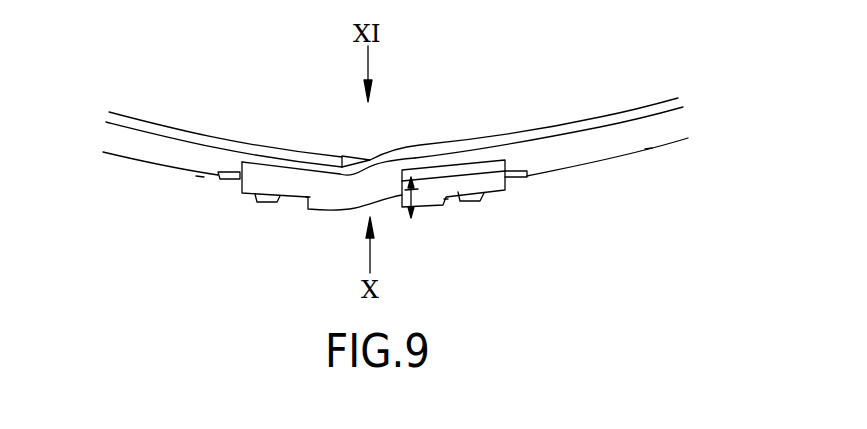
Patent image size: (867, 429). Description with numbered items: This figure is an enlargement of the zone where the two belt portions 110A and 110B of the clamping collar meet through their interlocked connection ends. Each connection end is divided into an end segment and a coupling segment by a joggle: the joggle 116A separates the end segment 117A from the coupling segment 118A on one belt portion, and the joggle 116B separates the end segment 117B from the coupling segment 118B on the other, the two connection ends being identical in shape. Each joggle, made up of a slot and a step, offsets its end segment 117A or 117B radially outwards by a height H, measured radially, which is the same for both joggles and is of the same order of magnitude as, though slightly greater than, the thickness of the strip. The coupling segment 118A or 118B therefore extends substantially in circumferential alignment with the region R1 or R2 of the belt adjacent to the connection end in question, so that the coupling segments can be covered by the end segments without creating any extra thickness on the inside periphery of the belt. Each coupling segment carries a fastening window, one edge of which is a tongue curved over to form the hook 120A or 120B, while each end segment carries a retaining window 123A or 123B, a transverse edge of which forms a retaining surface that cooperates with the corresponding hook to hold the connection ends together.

The belt portion 110A is at (597, 153).
The belt portion 110B is at (143, 153).
The joggle 116A is at (400, 135).
The joggle 116B is at (367, 153).
The end segment 117A is at (328, 208).
The end segment 117B is at (498, 183).
The coupling segment 118A is at (444, 150).
The coupling segment 118B is at (263, 150).
The hook 120A is at (483, 201).
The hook 120B is at (265, 203).
The retaining window 123A is at (296, 198).
The retaining window 123B is at (450, 198).
The region of the belt R1 is at (648, 152).
The region of the belt R2 is at (198, 176).
The height of the joggles H is at (421, 210).